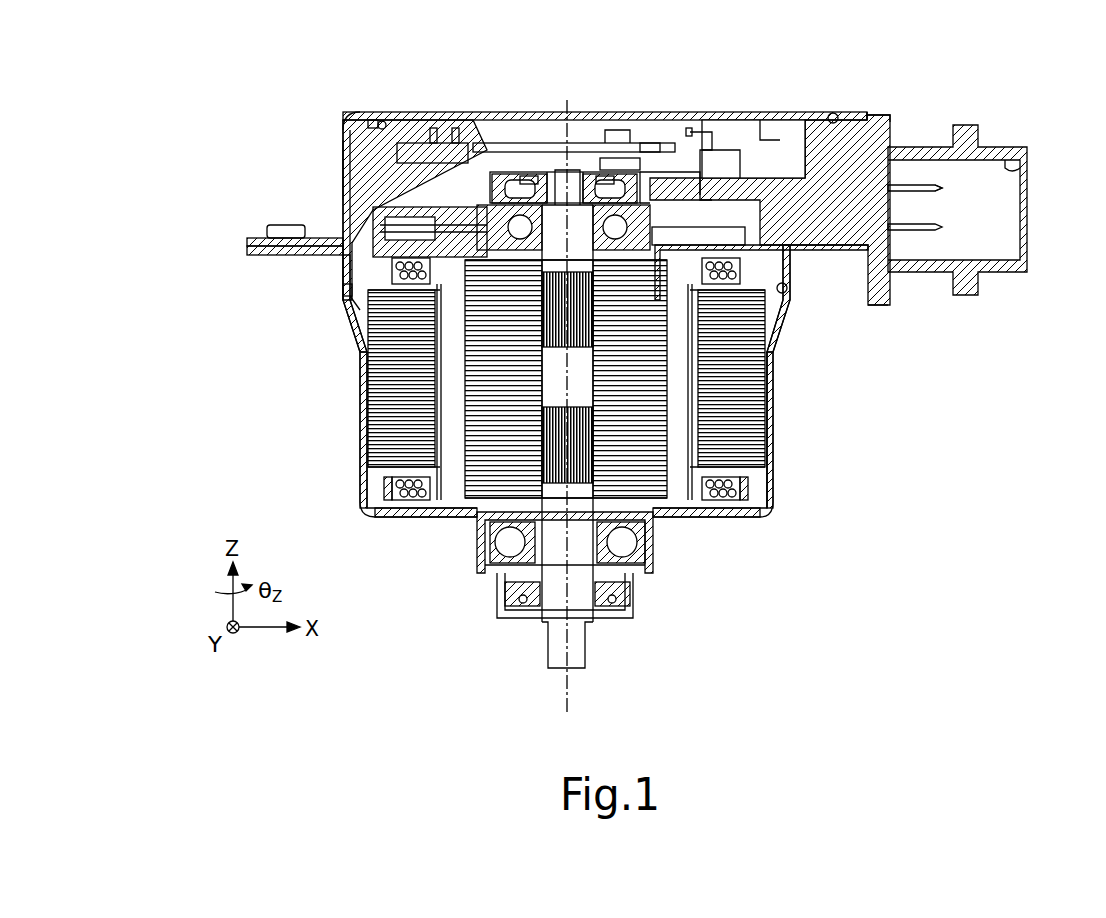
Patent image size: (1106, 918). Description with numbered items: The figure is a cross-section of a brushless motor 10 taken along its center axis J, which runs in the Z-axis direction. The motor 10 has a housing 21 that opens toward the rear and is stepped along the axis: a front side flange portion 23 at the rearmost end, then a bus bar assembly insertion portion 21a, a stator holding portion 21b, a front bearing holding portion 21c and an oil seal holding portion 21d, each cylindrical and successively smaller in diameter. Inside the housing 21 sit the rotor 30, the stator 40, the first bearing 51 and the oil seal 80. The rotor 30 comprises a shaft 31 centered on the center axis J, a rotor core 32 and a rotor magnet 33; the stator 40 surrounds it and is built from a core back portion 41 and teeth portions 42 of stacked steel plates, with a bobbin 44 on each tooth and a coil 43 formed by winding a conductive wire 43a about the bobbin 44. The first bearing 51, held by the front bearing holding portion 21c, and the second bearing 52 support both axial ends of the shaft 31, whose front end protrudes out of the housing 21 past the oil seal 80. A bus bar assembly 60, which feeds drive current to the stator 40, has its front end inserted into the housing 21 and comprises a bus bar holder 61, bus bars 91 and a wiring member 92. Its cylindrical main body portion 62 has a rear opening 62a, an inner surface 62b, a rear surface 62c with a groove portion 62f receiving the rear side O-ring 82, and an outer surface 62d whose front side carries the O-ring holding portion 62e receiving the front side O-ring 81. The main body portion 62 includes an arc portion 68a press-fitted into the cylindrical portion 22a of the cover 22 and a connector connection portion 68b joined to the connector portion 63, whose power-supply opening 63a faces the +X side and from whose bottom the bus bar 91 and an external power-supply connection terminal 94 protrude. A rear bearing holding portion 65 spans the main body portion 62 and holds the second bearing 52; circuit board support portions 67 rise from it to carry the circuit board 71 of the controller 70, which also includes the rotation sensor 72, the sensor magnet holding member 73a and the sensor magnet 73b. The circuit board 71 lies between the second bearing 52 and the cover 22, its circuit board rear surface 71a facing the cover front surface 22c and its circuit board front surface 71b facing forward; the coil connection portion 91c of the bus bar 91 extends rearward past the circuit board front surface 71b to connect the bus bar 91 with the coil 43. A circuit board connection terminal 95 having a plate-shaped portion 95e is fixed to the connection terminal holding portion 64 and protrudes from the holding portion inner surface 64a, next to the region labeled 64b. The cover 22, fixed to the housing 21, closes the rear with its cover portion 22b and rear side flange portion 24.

The motor 10 is at (1024, 115).
The housing 21 is at (350, 408).
The bus bar assembly insertion portion 21a is at (792, 273).
The stator holding portion 21b is at (775, 408).
The front bearing holding portion 21c is at (655, 555).
The oil seal holding portion 21d is at (633, 597).
The cover 22 is at (332, 167).
The cylindrical portion 22a is at (342, 153).
The cover portion 22b is at (805, 130).
The cover front surface 22c is at (864, 115).
The front side flange portion 23 is at (250, 253).
The rear side flange portion 24 is at (250, 240).
The rotor 30 is at (679, 240).
The shaft 31 is at (585, 555).
The rotor core 32 is at (640, 430).
The rotor magnet 33 is at (595, 410).
The stator 40 is at (766, 483).
The core back portion 41 is at (410, 427).
The teeth portion 42 is at (417, 433).
The coil 43 is at (737, 470).
The conductive wire 43a is at (744, 498).
The bobbin 44 is at (772, 470).
The first bearing 51 is at (505, 543).
The second bearing 52 is at (530, 212).
The bus bar assembly 60 is at (971, 320).
The bus bar holder 61 is at (884, 106).
The main body portion 62 is at (347, 112).
The opening 62a is at (415, 120).
The inner surface of main body portion 62b is at (795, 162).
The rear surface of main body portion 62c is at (834, 113).
The outer surface of main body portion 62d is at (380, 207).
The O-ring holding portion 62e is at (343, 289).
The groove portion 62f is at (383, 120).
The connector portion 63 is at (997, 263).
The power-supply opening 63a is at (1015, 168).
The connection terminal holding portion 64 is at (785, 160).
The holding portion inner surface 64a is at (735, 150).
The sensor holder portion 64b is at (760, 135).
The rear bearing holding portion 65 is at (617, 130).
The circuit board support portion 67 is at (372, 208).
The arc portion 68a is at (340, 120).
The connector connection portion 68b is at (892, 118).
The controller 70 is at (520, 126).
The circuit board 71 is at (505, 175).
The circuit board rear surface 71a is at (556, 172).
The circuit board front surface 71b is at (698, 190).
The rotation sensor 72 is at (600, 174).
The sensor magnet holding member 73a is at (529, 176).
The sensor magnet 73b is at (630, 190).
The oil seal 80 is at (628, 606).
The front side O-ring 81 is at (352, 303).
The rear side O-ring 82 is at (372, 118).
The bus bar 91 is at (918, 231).
The coil connection portion 91c is at (442, 143).
The wiring member 92 is at (913, 172).
The external power-supply connection terminal 94 is at (940, 190).
The circuit board connection terminal 95 is at (708, 135).
The plate-shaped portion 95e is at (688, 132).
The center axis J is at (572, 690).